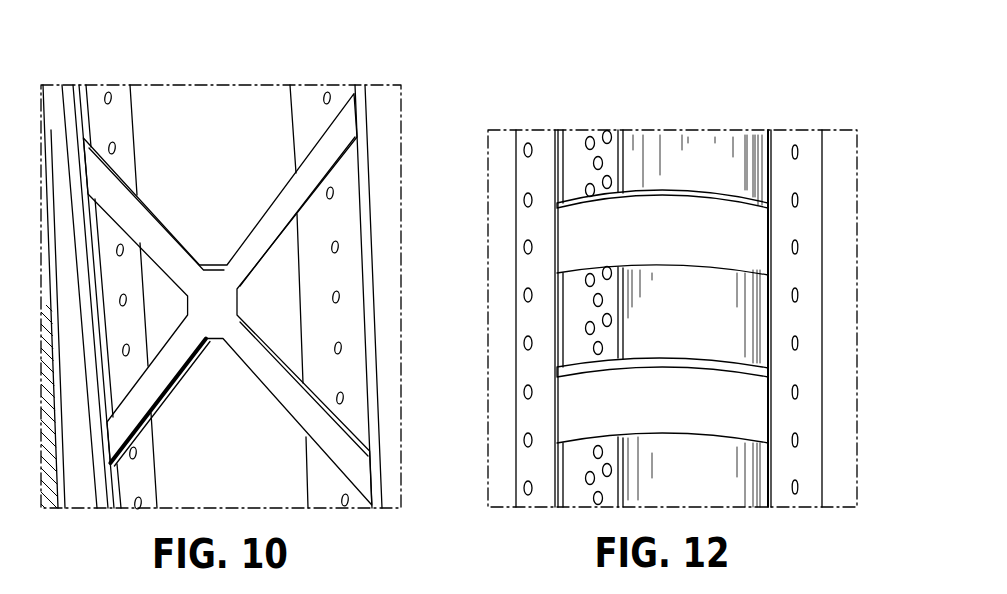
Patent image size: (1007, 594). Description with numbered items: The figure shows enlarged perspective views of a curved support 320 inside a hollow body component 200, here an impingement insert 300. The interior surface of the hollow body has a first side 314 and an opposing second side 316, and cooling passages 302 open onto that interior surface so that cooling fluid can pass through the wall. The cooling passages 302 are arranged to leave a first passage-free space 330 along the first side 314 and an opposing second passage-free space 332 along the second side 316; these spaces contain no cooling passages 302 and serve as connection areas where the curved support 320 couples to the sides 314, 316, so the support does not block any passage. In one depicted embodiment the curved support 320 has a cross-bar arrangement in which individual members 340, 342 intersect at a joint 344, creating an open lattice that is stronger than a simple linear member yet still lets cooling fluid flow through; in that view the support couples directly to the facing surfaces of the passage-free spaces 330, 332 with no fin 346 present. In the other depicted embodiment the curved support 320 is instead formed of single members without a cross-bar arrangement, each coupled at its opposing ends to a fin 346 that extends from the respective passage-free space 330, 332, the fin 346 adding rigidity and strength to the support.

In FIG. 10, the hollow body component 200 is at (240, 274).
In FIG. 12, the hollow body component 200 is at (676, 281).
In FIG. 10, the impingement insert 300 is at (240, 274).
In FIG. 12, the impingement insert 300 is at (676, 281).
In FIG. 10, the cooling passages 302 is at (112, 99).
In FIG. 12, the cooling passages 302 is at (527, 145).
In FIG. 10, the first side 314 is at (55, 272).
In FIG. 10, the second side 316 is at (373, 217).
In FIG. 10, the curved supports 320 is at (227, 282).
In FIG. 12, the curved supports 320 is at (663, 190).
In FIG. 10, the first passage-free space 330 is at (63, 240).
In FIG. 12, the first passage-free space 330 is at (550, 227).
In FIG. 10, the second passage-free space 332 is at (347, 258).
In FIG. 12, the second passage-free space 332 is at (777, 318).
In FIG. 10, the member 340 is at (113, 190).
In FIG. 10, the member 342 is at (333, 140).
In FIG. 10, the joint 344 is at (213, 315).
In FIG. 10, the fin 346 is at (75, 118).